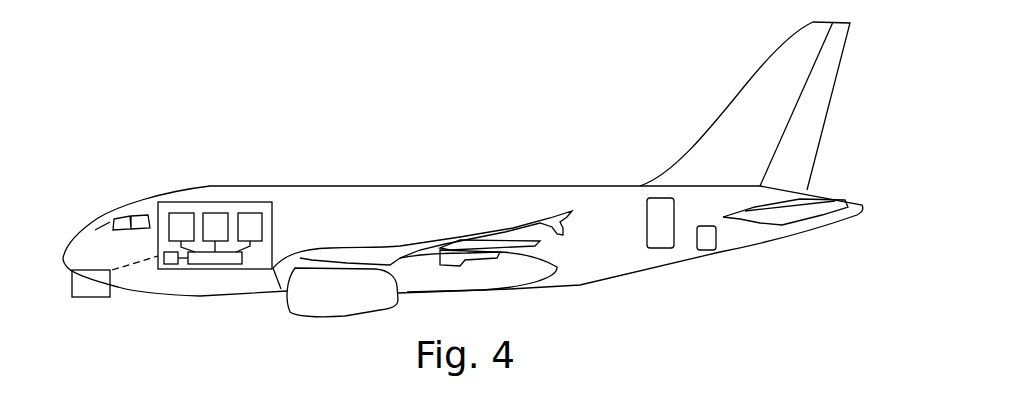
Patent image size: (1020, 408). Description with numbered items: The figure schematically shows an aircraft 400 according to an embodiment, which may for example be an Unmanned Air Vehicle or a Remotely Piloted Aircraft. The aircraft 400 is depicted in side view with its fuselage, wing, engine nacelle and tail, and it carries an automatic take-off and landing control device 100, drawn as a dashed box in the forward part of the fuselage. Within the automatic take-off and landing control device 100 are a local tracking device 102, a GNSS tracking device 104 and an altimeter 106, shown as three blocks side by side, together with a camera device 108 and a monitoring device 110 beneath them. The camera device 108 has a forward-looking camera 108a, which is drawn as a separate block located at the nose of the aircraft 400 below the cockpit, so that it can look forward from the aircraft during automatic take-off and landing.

The aircraft 400 is at (128, 128).
The automatic take-off and landing control device 100 is at (252, 200).
The local tracking device 102 is at (183, 213).
The GNSS tracking device 104 is at (215, 213).
The altimeter 106 is at (262, 224).
The camera device 108 is at (171, 265).
The forward-looking camera 108a is at (93, 297).
The monitoring device 110 is at (217, 264).